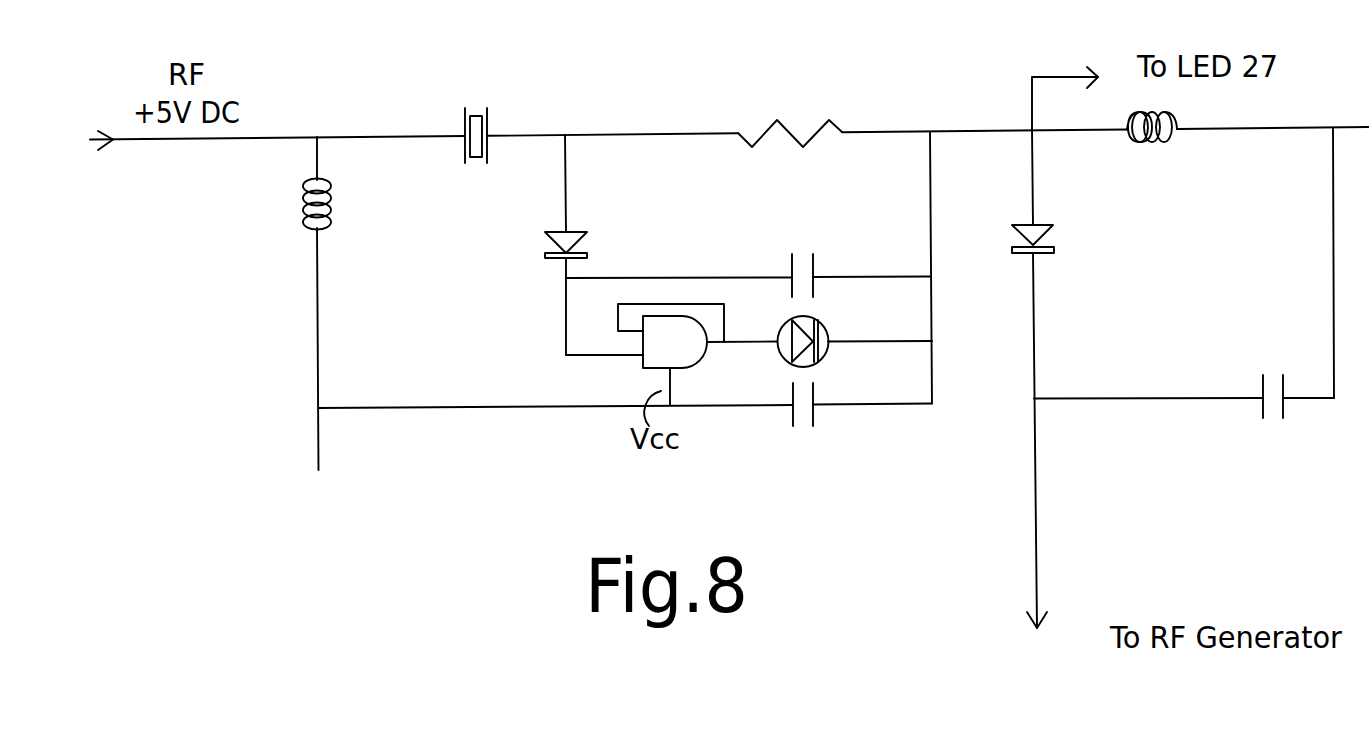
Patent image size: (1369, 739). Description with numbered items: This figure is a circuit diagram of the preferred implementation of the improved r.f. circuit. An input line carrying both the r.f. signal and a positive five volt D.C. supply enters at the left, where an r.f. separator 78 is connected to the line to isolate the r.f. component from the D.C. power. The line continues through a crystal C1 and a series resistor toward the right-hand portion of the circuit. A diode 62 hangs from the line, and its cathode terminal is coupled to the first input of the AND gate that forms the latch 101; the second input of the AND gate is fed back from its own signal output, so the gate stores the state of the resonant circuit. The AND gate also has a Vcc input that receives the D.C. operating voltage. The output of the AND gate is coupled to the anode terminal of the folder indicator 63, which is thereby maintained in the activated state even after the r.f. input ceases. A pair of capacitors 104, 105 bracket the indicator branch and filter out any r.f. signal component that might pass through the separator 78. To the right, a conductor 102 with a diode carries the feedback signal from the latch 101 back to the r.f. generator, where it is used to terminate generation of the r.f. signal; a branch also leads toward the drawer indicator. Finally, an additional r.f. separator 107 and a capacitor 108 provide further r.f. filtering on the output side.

The crystal C1 is at (478, 102).
The r.f. separator 78 is at (293, 212).
The diode 62 is at (577, 227).
The latch 101 is at (673, 347).
The capacitor 104 is at (800, 252).
The folder indicator 63 is at (825, 330).
The capacitor 105 is at (807, 425).
The conductor 102 is at (1037, 577).
The additional r.f. separator 107 is at (1163, 155).
The capacitor 108 is at (1272, 365).